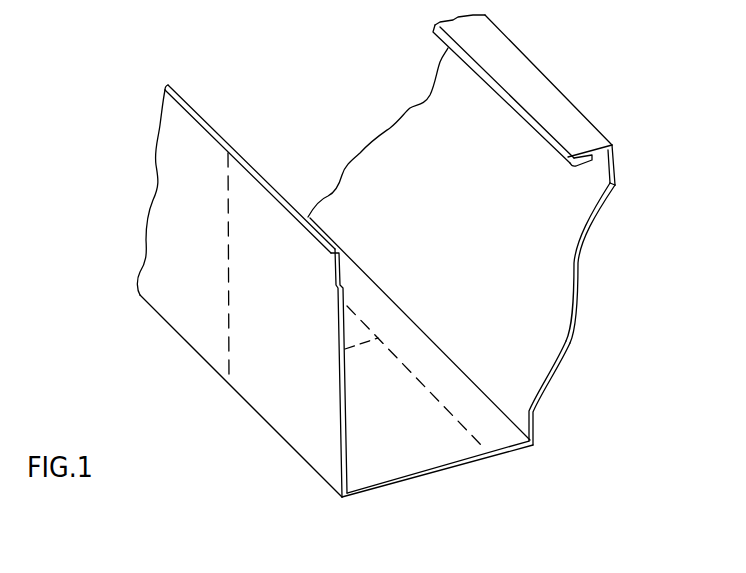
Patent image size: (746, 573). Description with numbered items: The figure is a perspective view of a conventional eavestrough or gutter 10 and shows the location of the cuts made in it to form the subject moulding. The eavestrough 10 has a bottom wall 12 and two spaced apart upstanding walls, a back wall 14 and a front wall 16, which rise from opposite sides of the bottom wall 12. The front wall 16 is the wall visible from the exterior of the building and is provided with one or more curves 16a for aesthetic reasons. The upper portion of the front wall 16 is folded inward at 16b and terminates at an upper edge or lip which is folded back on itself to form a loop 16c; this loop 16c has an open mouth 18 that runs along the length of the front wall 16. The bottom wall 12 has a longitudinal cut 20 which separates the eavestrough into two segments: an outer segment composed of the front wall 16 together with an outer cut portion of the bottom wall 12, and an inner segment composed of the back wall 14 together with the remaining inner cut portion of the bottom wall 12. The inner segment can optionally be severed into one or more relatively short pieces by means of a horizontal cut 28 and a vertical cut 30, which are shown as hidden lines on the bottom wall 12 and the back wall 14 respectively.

The eavestrough 10 is at (347, 110).
The bottom wall 12 is at (418, 458).
The back wall 14 is at (283, 412).
The front wall 16 is at (537, 372).
The curve 16a is at (577, 315).
The inward fold 16b is at (555, 108).
The loop 16c is at (580, 170).
The open mouth 18 is at (602, 161).
The longitudinal cut 20 is at (488, 441).
The horizontal cut 28 is at (375, 341).
The vertical cut 30 is at (230, 347).